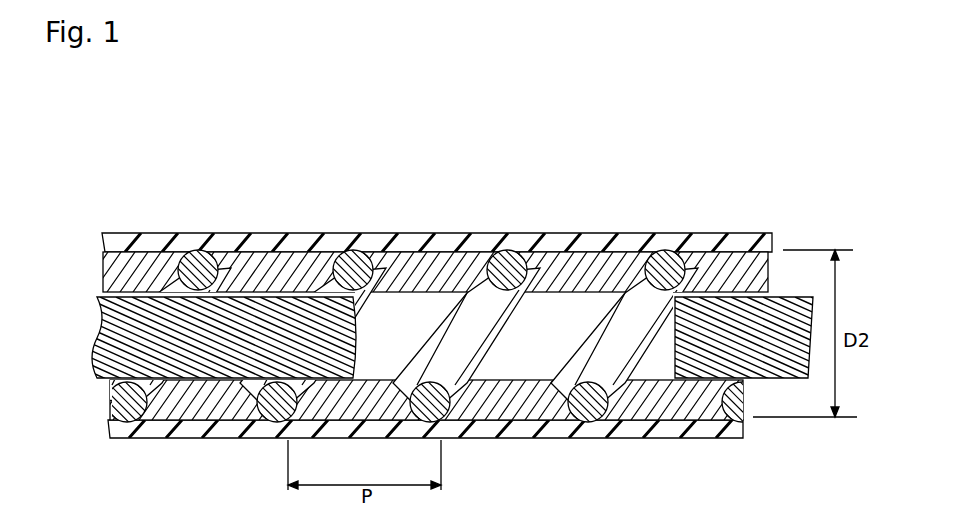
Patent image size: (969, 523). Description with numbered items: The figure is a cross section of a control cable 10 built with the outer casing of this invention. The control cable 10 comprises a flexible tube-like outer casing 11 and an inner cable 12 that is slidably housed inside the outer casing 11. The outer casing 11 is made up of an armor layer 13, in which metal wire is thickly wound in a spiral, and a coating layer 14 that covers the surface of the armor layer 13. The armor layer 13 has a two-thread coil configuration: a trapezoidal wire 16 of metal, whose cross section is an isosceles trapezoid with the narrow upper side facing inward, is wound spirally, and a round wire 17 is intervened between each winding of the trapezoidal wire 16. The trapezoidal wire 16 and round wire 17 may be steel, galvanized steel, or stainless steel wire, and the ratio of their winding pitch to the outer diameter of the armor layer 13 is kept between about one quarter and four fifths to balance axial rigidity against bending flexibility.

The control cable 10 is at (484, 281).
The outer casing 11 is at (452, 299).
The inner cable 12 is at (773, 297).
The armor layer 13 is at (446, 281).
The coating layer 14 is at (290, 243).
The trapezoidal wire 16 is at (437, 247).
The round wire 17 is at (422, 163).